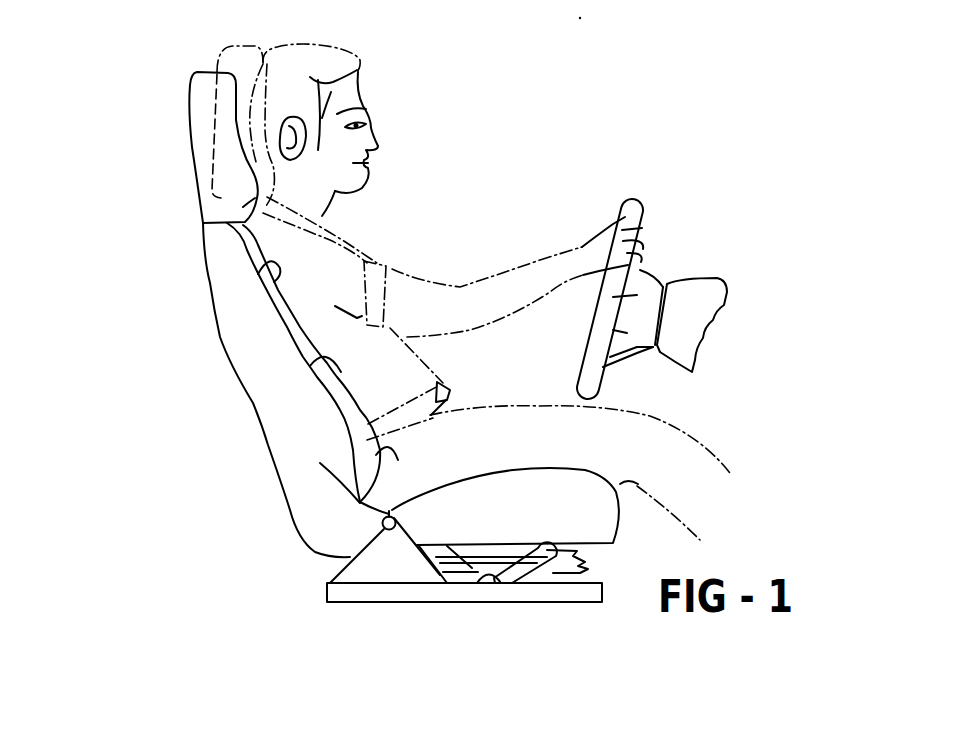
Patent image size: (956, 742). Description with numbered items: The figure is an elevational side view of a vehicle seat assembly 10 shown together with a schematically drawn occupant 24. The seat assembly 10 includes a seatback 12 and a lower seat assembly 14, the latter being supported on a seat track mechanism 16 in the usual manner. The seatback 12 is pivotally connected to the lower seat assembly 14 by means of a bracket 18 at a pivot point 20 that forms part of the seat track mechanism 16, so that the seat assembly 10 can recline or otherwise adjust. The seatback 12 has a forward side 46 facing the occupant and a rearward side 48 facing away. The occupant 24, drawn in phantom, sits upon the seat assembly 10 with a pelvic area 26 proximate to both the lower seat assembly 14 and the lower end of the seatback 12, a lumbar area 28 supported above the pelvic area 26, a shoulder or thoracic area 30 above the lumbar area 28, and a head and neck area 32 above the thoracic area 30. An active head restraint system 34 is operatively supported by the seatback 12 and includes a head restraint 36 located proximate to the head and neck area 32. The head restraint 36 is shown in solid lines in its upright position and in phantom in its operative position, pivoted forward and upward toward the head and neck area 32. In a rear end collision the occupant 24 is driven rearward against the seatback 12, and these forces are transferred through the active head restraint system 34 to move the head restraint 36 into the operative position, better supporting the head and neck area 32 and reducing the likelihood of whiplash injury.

The vehicle seat assembly 10 is at (196, 454).
The seatback 12 is at (215, 357).
The lower seat assembly 14 is at (632, 510).
The seat track mechanism 16 is at (470, 600).
The bracket 18 is at (353, 573).
The pivot point 20 is at (394, 511).
The occupant 24 is at (395, 207).
The pelvic area 26 is at (380, 445).
The lumbar area 28 is at (310, 365).
The shoulder or thoracic area 30 is at (260, 271).
The head and neck area 32 is at (283, 187).
The active head restraint system 34 is at (171, 215).
The head restraint 36 is at (200, 90).
The forward side 46 is at (285, 303).
The rearward side 48 is at (214, 312).